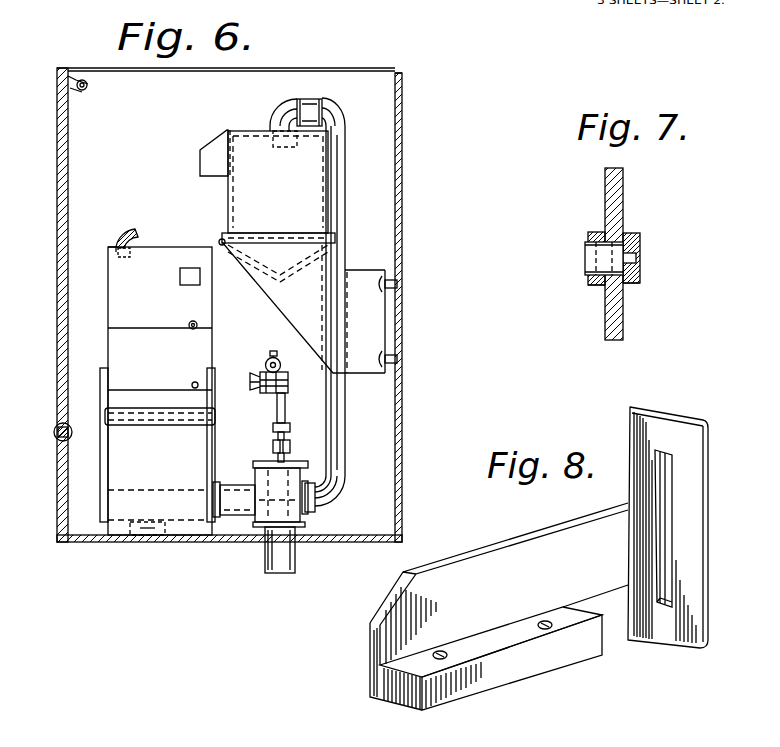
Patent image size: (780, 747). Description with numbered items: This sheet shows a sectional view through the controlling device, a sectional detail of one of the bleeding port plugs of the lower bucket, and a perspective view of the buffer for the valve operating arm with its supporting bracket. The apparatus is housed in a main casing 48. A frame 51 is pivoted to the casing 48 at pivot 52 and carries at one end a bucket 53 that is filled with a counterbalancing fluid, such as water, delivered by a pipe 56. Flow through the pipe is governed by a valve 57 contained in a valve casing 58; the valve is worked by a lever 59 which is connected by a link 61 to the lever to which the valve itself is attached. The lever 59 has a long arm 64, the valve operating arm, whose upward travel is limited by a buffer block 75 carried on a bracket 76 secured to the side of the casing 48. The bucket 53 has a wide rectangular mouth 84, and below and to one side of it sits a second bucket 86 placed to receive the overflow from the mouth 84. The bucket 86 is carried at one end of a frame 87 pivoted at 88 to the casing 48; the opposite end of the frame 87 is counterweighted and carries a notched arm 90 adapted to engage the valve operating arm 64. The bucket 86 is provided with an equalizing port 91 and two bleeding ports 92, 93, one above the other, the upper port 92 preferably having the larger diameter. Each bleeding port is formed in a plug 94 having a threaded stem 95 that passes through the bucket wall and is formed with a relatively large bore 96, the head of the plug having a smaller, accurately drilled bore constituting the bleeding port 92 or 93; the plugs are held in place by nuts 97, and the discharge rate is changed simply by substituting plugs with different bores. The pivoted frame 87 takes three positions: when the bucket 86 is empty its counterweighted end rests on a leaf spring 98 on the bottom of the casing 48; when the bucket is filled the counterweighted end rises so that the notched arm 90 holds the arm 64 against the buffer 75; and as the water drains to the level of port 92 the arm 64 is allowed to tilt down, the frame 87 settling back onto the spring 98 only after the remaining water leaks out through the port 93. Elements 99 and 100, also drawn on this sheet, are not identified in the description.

In FIG. 6, the main casing 48 is at (400, 310).
In FIG. 6, the frame 51 is at (337, 250).
In FIG. 6, the pivot 52 is at (220, 243).
In FIG. 6, the bucket 53 is at (257, 168).
In FIG. 6, the pipe 56 is at (342, 185).
In FIG. 6, the valve 57 is at (291, 448).
In FIG. 6, the valve casing 58 is at (318, 506).
In FIG. 6, the lever 59 is at (285, 410).
In FIG. 6, the link 61 is at (274, 440).
In FIG. 6, the long arm 64 is at (281, 365).
In FIG. 8, the buffer block 75 is at (533, 655).
In FIG. 8, the bracket 76 is at (677, 528).
In FIG. 6, the mouth 84 is at (210, 163).
In FIG. 6, the bucket 86 is at (200, 350).
In FIG. 7, the bucket 86 is at (612, 205).
In FIG. 6, the frame 87 is at (103, 452).
In FIG. 6, the pivot 88 is at (105, 415).
In FIG. 6, the notched arm 90 is at (248, 547).
In FIG. 6, the equalizing port 91 is at (180, 276).
In FIG. 6, the bleeding port 92 is at (189, 323).
In FIG. 7, the bleeding port 92 is at (622, 260).
In FIG. 6, the bleeding port 93 is at (193, 383).
In FIG. 7, the plug 94 is at (630, 278).
In FIG. 7, the threaded stem 95 is at (595, 235).
In FIG. 7, the bore 96 is at (593, 258).
In FIG. 7, the nut 97 is at (600, 288).
In FIG. 6, the leaf spring 98 is at (142, 538).
In FIG. 6, the stop 99 is at (116, 240).
In FIG. 6, the spring 100 is at (128, 228).